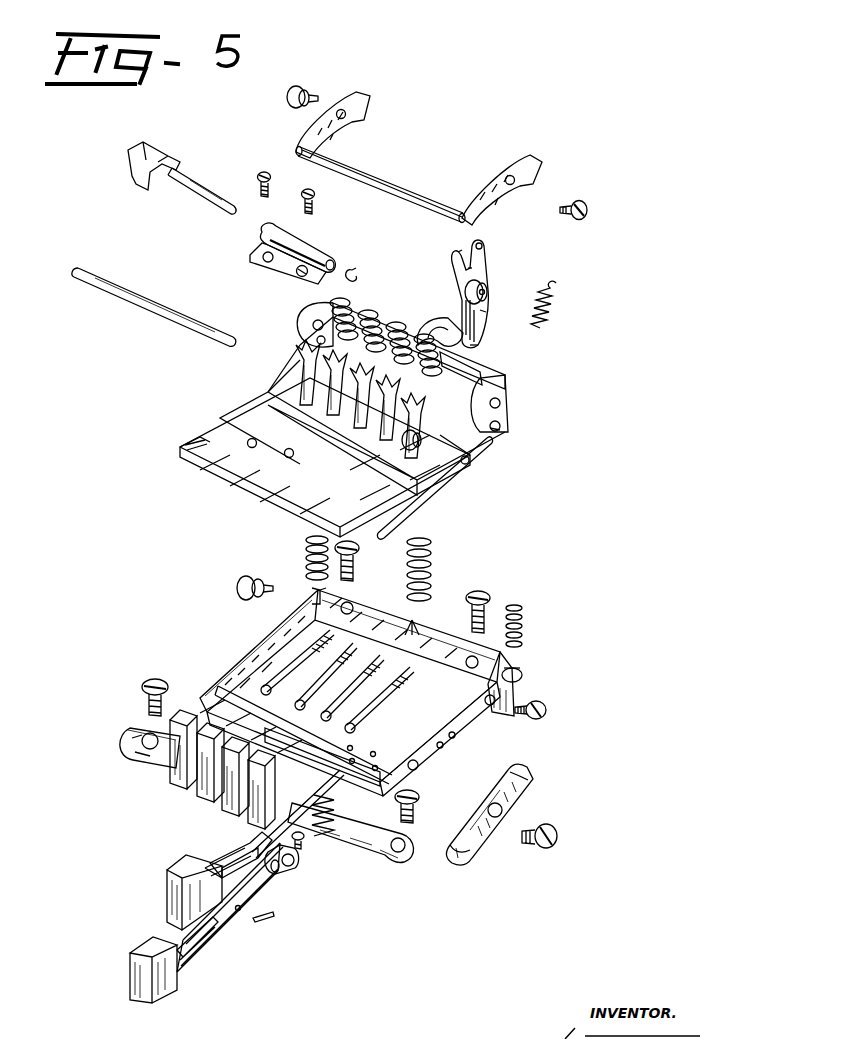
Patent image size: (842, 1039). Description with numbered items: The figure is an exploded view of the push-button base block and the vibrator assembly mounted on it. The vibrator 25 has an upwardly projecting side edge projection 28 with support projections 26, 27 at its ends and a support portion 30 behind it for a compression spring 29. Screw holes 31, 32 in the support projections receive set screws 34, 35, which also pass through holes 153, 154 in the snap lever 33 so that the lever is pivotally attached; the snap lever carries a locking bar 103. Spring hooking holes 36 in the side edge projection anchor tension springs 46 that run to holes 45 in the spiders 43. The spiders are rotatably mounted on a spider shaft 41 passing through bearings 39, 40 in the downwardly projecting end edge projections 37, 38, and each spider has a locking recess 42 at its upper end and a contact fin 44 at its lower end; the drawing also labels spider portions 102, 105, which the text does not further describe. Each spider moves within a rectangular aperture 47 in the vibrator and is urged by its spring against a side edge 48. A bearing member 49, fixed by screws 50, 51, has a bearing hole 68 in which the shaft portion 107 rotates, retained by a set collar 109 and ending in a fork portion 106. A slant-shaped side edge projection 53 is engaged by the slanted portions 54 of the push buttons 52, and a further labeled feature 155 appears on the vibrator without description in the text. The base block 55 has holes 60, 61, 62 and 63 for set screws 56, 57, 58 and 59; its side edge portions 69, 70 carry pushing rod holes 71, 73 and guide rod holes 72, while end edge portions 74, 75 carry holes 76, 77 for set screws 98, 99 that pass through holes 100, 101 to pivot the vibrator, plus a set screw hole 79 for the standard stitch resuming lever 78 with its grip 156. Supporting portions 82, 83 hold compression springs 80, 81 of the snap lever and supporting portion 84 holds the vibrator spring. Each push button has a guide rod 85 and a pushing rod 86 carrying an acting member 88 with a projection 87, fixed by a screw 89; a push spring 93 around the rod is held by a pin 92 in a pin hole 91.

The vibrator 25 is at (243, 476).
The support projection 26 is at (300, 328).
The support projection 27 is at (508, 418).
The side edge projection 28 is at (508, 379).
The compression spring 29 is at (432, 560).
The support portion 30 is at (434, 330).
The screw hole 31 is at (305, 312).
The screw hole 32 is at (502, 403).
The snap lever 33 is at (368, 97).
The set screw 34 is at (303, 88).
The set screw 35 is at (589, 208).
The spring hooking hole 36 is at (472, 372).
The end edge projection 37 is at (426, 500).
The end edge projection 38 is at (266, 391).
The bearing 39 is at (298, 366).
The bearing 40 is at (470, 462).
The spider shaft 41 is at (160, 316).
The locking recess 42 is at (474, 270).
The spider 43 is at (488, 290).
The contact fin 44 is at (478, 340).
The hole 45 is at (486, 248).
The tension spring 46 is at (556, 300).
The rectangular aperture 47 is at (300, 410).
The side edge 48 is at (456, 462).
The bearing member 49 is at (316, 245).
The screw 50 is at (272, 178).
The screw 51 is at (316, 194).
The push button 52 is at (220, 795).
The side edge projection 53 is at (188, 440).
The slanted portion 54 is at (170, 972).
The base block 55 is at (437, 633).
The set screw 56 is at (150, 679).
The set screw 57 is at (360, 552).
The set screw 58 is at (486, 594).
The set screw 59 is at (420, 808).
The hole 60 is at (128, 742).
The hole 61 is at (408, 624).
The hole 62 is at (480, 662).
The hole 63 is at (400, 858).
The bearing hole 68 is at (322, 265).
The side edge portion 69 is at (228, 690).
The side edge portion 70 is at (312, 618).
The pushing rod hole 71 is at (330, 786).
The guide rod hole 72 is at (355, 775).
The pushing rod hole 73 is at (462, 702).
The end edge portion 74 is at (268, 650).
The end edge portion 75 is at (490, 706).
The hole 76 is at (310, 592).
The hole 77 is at (502, 700).
The standard stitch resuming lever 78 is at (528, 780).
The set screw hole 79 is at (420, 768).
The compression spring 80 is at (308, 540).
The compression spring 81 is at (525, 608).
The supporting portion 82 is at (352, 604).
The supporting portion 83 is at (522, 670).
The supporting portion 84 is at (414, 622).
The guide rod 85 is at (228, 855).
The pushing rod 86 is at (200, 956).
The projection 87 is at (262, 860).
The acting member 88 is at (292, 866).
The screw 89 is at (300, 850).
The pin hole 91 is at (242, 912).
The pin 92 is at (275, 916).
The push spring 93 is at (380, 680).
The set screw 98 is at (243, 577).
The set screw 99 is at (547, 708).
The hole 100 is at (316, 341).
The hole 101 is at (500, 432).
The lever arm 102 is at (456, 260).
The locking bar 103 is at (410, 197).
The lever portion 105 is at (484, 318).
The fork portion 106 is at (134, 183).
The shaft portion 107 is at (206, 210).
The set collar 109 is at (362, 274).
The hole 153 is at (345, 118).
The hole 154 is at (512, 176).
The hole 155 is at (252, 448).
The grip 156 is at (293, 455).